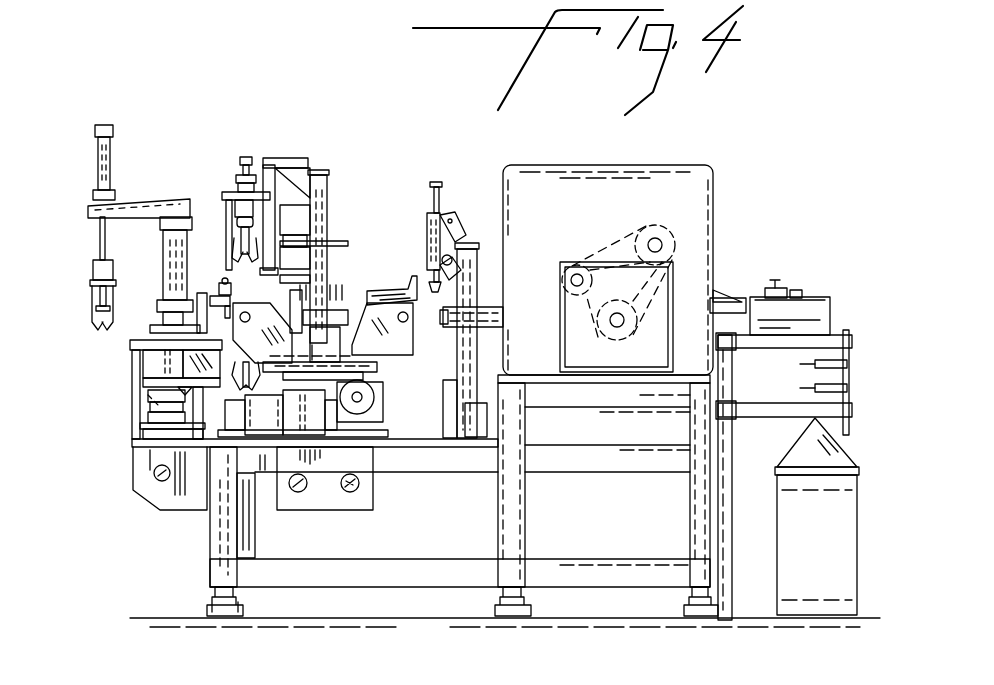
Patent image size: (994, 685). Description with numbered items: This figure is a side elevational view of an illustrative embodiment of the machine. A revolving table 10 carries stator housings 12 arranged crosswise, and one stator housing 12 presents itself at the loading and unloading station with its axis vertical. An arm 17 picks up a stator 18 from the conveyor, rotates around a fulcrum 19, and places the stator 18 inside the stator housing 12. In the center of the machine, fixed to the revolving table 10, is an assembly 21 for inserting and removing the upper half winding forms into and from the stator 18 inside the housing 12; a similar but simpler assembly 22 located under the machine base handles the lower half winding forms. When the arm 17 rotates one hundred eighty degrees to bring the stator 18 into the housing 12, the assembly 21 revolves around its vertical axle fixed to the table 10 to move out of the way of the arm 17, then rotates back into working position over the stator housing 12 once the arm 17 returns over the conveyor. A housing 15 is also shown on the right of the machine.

The revolving table 10 is at (345, 360).
The stator housing 12 is at (230, 302).
The drive housing 15 is at (527, 195).
The arm 17 is at (150, 200).
The stator 18 is at (100, 328).
The fulcrum 19 is at (187, 252).
The assembly for insertion/removal of upper half winding forms 21 is at (322, 142).
The assembly for insertion/removal of lower half winding forms 22 is at (233, 378).